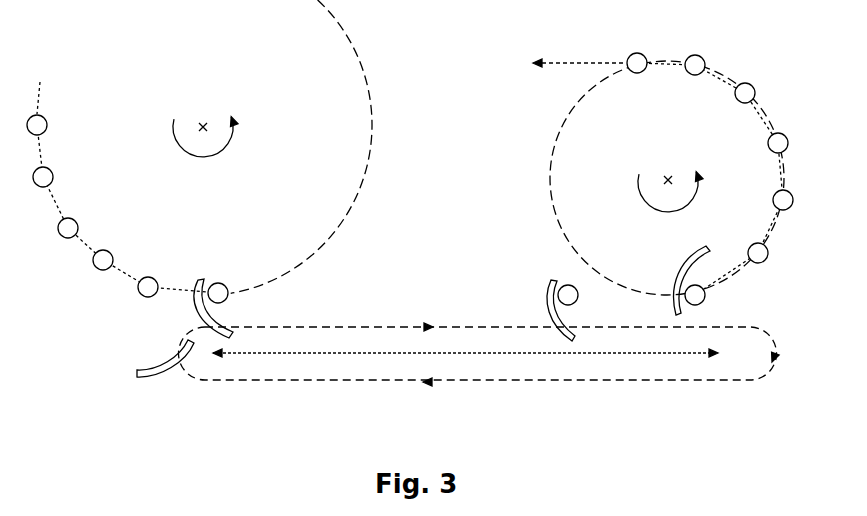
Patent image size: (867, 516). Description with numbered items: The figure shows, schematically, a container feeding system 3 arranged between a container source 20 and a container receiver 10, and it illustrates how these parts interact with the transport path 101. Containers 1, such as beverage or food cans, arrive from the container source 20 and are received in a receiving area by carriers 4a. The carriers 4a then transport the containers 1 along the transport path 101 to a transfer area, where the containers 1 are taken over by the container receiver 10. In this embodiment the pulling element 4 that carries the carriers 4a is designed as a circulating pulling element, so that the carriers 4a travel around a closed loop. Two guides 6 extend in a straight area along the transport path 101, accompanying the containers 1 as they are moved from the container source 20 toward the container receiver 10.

The container 1 is at (53, 176).
The container feeding system 3 is at (98, 352).
The pulling element 4 is at (188, 368).
The carrier 4a is at (138, 377).
The guide 6 is at (477, 326).
The container receiver 10 is at (667, 153).
The container source 20 is at (307, 98).
The transport path 101 is at (465, 343).